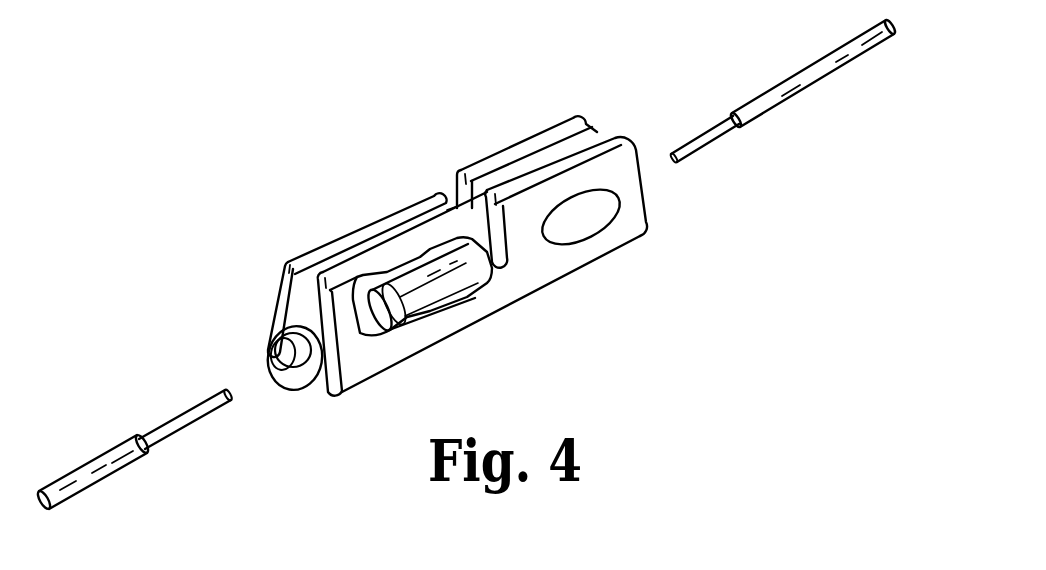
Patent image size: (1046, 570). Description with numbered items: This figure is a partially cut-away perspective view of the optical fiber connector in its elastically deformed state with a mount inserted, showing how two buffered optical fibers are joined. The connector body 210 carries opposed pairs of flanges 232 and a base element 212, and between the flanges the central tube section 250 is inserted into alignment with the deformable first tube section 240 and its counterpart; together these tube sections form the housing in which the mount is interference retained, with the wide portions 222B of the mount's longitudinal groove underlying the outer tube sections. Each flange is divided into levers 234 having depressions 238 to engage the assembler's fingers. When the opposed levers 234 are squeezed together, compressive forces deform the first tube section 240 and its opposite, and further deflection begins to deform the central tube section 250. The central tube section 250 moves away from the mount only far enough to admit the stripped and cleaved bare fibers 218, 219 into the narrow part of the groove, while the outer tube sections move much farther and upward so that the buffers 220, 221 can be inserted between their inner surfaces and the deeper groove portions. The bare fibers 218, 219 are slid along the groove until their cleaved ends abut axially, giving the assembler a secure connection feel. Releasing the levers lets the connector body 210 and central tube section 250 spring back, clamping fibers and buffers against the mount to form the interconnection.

The connector body 210 is at (540, 296).
The fiber entry opening 212 is at (300, 391).
The bare fiber 218 is at (165, 432).
The bare fiber 219 is at (698, 147).
The buffer 220 is at (87, 467).
The buffer 221 is at (775, 93).
The wide portion of longitudinal groove 222B is at (285, 353).
The flanges 232 is at (278, 272).
The levers 234 is at (456, 232).
The depressions 238 is at (583, 223).
The first tube section 240 is at (300, 328).
The central tube section 250 is at (428, 285).